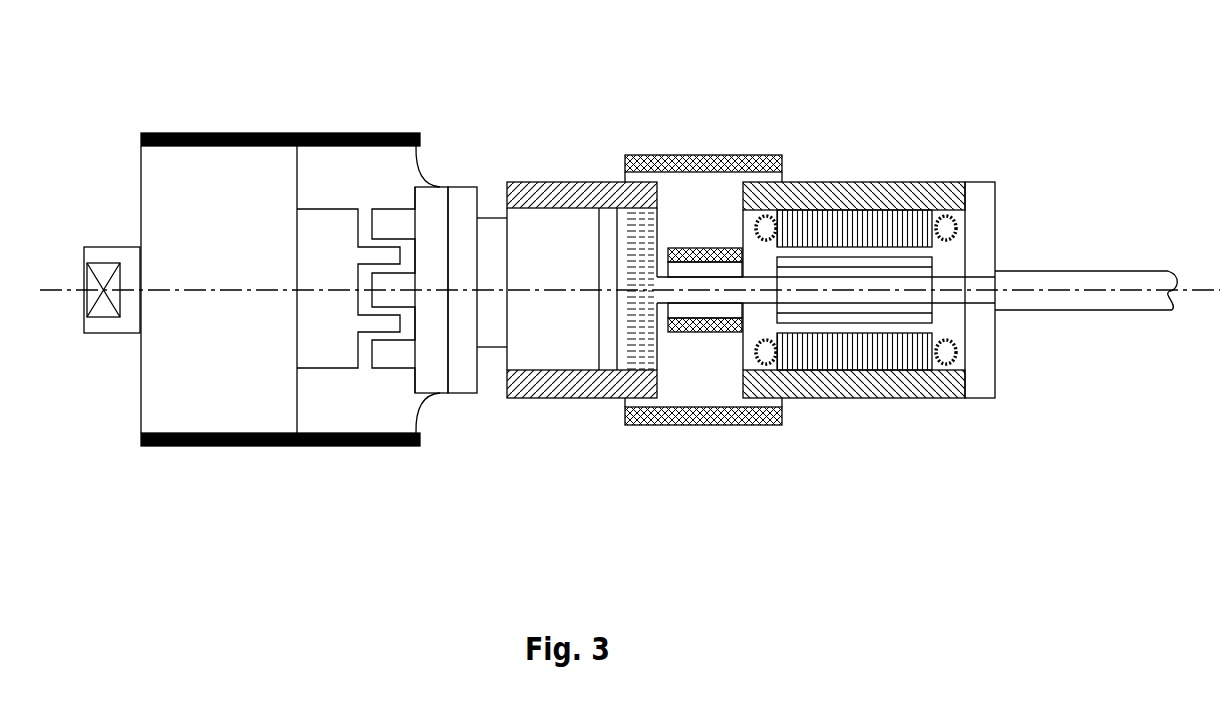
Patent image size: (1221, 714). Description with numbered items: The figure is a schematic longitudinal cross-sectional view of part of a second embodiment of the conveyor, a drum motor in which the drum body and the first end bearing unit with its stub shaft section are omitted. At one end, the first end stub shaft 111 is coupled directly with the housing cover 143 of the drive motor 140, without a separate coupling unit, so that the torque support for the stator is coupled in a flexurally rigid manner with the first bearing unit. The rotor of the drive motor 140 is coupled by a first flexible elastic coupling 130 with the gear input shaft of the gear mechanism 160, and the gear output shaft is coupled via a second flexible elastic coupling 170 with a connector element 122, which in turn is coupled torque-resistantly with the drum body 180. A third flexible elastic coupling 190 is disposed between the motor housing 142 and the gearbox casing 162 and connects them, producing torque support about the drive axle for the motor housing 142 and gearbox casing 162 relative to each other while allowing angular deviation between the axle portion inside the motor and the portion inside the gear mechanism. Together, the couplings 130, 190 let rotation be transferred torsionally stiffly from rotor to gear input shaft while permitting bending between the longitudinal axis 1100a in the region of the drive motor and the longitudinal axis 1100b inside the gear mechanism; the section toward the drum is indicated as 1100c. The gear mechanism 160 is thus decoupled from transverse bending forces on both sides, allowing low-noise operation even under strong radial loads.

The first end stub shaft 111 is at (1103, 290).
The connector element 122 is at (235, 172).
The first flexible elastic coupling 130 is at (692, 248).
The drive motor 140 is at (910, 268).
The motor housing 142 is at (857, 385).
The housing cover 143 is at (982, 218).
The gear mechanism 160 is at (561, 277).
The gearbox casing 162 is at (532, 398).
The second flexible elastic coupling 170 is at (438, 142).
The drum body 180 is at (333, 447).
The third flexible elastic coupling 190 is at (662, 425).
The longitudinal axis in the region of the drive motor 1100a is at (855, 290).
The longitudinal axis inside the gear mechanism 1100b is at (572, 290).
The compressor shaft portion 1100c is at (267, 290).